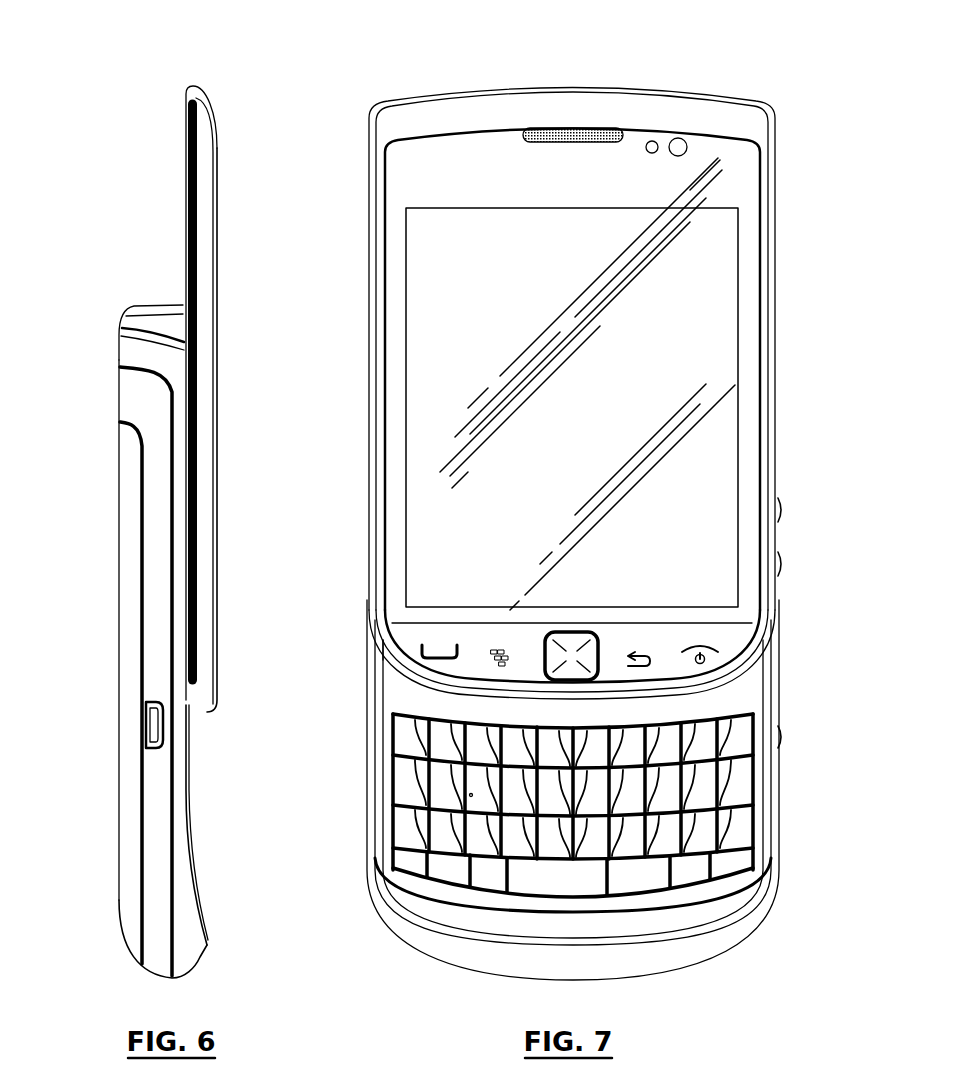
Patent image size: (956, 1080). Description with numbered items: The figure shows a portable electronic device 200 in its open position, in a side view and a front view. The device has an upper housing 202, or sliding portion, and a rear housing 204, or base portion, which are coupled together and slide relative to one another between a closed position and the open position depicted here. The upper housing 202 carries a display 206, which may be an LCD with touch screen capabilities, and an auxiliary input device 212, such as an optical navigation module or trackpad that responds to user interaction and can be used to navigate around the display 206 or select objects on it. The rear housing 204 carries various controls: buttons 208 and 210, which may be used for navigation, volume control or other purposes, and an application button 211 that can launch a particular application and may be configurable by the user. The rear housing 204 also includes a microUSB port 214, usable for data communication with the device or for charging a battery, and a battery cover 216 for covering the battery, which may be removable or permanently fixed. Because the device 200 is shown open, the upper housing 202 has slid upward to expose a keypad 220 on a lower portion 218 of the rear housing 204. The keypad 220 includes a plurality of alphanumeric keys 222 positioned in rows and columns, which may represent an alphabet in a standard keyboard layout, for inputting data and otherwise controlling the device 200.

In FIG. 6, the portable electronic device 200 is at (176, 64).
In FIG. 7, the portable electronic device 200 is at (526, 58).
In FIG. 6, the upper housing 202 is at (198, 189).
In FIG. 7, the upper housing 202 is at (413, 117).
In FIG. 6, the rear housing 204 is at (128, 402).
In FIG. 7, the rear housing 204 is at (369, 697).
In FIG. 6, the display 206 is at (217, 312).
In FIG. 7, the display 206 is at (708, 308).
In FIG. 7, the button 208 is at (781, 510).
In FIG. 7, the button 210 is at (781, 566).
In FIG. 7, the application button 211 is at (781, 736).
In FIG. 7, the auxiliary input device 212 is at (598, 657).
In FIG. 6, the microUSB port 214 is at (153, 728).
In FIG. 6, the battery cover 216 is at (128, 578).
In FIG. 6, the lower portion 218 is at (186, 940).
In FIG. 7, the lower portion 218 is at (360, 830).
In FIG. 6, the keypad 220 is at (196, 883).
In FIG. 7, the keypad 220 is at (708, 788).
In FIG. 7, the alphanumeric keys 222 is at (700, 840).